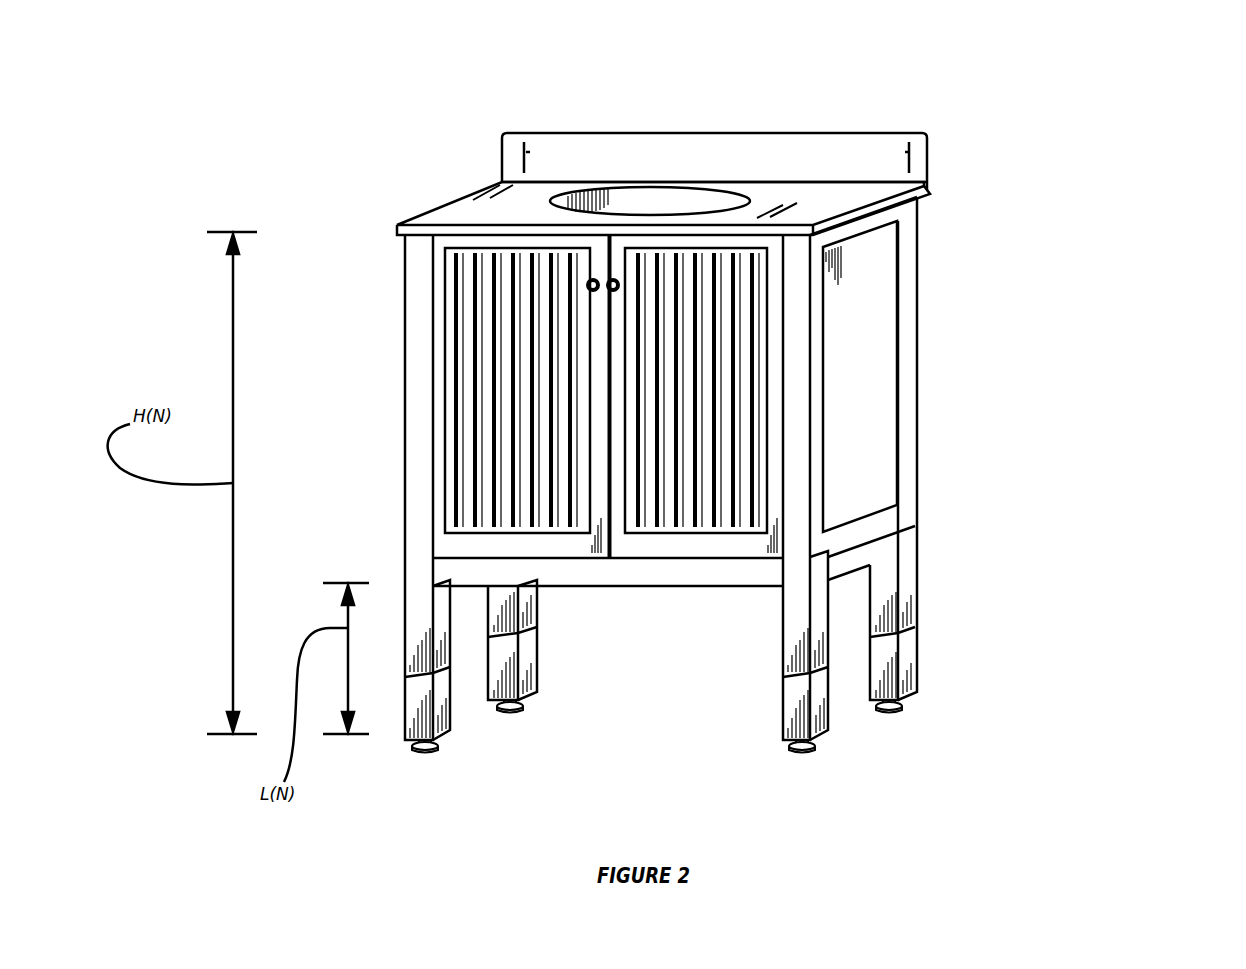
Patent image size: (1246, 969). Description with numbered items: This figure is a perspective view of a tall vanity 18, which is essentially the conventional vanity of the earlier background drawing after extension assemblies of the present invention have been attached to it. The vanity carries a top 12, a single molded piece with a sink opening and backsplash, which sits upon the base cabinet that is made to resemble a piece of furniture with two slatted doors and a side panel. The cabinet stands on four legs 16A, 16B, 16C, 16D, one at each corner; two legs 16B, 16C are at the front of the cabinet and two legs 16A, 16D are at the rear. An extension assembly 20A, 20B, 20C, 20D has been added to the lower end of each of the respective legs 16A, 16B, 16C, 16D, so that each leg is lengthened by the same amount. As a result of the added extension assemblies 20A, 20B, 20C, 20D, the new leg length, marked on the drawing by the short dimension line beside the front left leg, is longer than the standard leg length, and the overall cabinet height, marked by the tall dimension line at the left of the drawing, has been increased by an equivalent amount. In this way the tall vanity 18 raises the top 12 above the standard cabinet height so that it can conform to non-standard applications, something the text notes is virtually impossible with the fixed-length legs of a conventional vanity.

The top 12 is at (490, 215).
The tall vanity 18 is at (1022, 182).
The leg 16A is at (913, 588).
The leg 16B is at (793, 622).
The leg 16C is at (447, 618).
The leg 16D is at (530, 598).
The extension assembly 20A is at (933, 682).
The extension assembly 20B is at (848, 723).
The extension assembly 20C is at (397, 710).
The extension assembly 20D is at (552, 675).